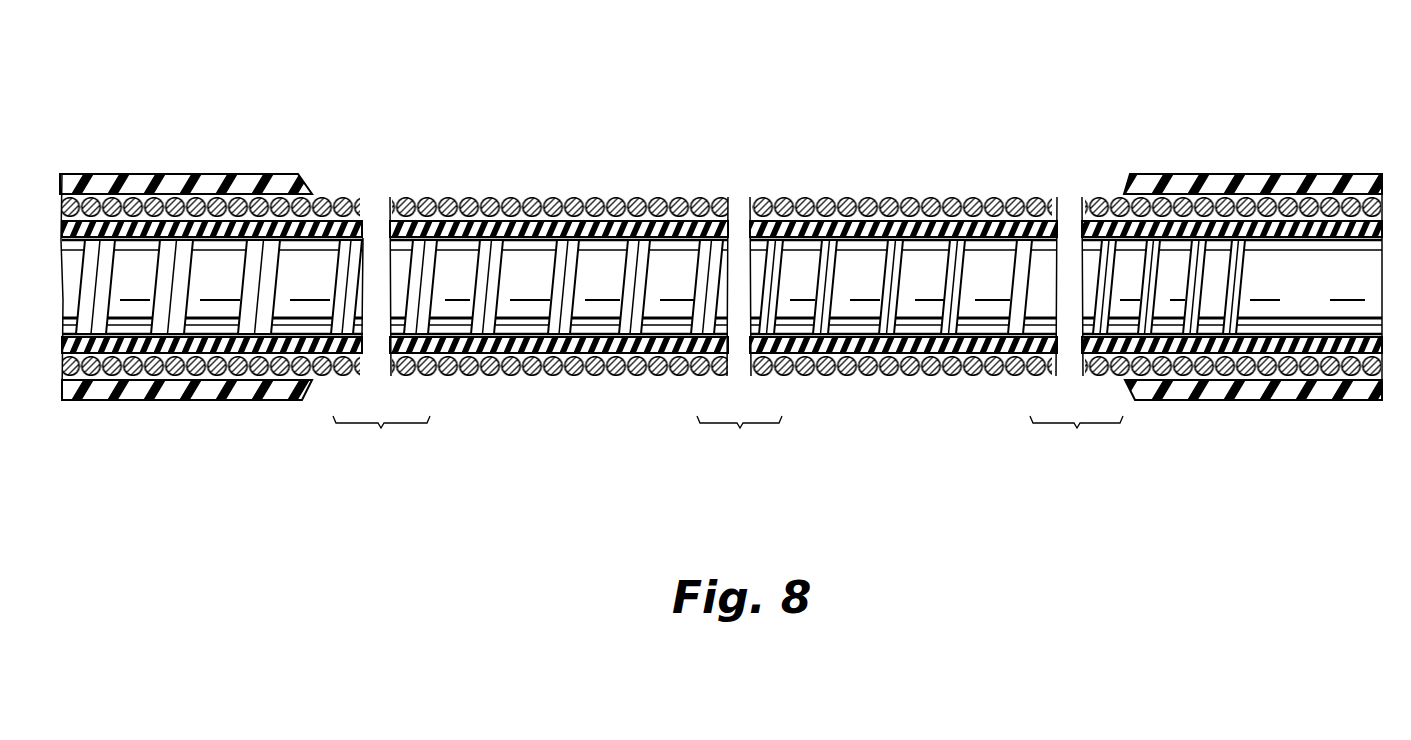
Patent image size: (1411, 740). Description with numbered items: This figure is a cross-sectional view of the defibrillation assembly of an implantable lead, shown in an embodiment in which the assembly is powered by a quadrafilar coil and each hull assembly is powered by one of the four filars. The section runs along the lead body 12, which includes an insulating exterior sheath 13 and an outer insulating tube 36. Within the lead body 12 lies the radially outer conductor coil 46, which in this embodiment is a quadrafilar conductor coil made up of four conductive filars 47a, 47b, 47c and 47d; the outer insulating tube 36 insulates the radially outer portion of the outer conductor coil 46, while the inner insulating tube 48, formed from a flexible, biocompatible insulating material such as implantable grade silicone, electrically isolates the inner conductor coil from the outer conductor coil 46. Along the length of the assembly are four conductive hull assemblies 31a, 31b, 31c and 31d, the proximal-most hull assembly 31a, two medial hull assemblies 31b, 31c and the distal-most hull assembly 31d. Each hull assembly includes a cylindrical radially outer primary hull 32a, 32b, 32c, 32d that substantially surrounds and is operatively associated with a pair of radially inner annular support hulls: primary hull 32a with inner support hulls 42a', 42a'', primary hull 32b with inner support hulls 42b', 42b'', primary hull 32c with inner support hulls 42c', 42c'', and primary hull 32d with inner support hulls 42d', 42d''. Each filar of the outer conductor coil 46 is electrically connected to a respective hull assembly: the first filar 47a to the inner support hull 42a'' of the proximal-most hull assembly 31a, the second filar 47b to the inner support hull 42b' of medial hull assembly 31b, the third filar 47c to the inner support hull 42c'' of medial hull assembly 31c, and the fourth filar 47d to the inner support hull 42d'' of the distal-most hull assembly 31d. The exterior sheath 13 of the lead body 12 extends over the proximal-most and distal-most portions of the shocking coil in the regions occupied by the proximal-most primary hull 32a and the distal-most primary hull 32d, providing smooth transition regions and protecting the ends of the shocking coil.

The lead body 12 is at (85, 176).
The exterior sheath 13 is at (1333, 186).
The outer insulating tube 36 is at (1062, 200).
The outer conductor coil 46 is at (205, 280).
The inner insulating tube 48 is at (1320, 298).
The first filar 47a is at (155, 176).
The second filar 47b is at (145, 176).
The third filar 47c is at (120, 176).
The fourth filar 47d is at (105, 176).
The proximal-most hull assembly 31a is at (240, 157).
The proximal-most primary hull 32a is at (316, 178).
The medial hull assembly 31b is at (565, 398).
The primary outer hull 32b is at (559, 394).
The medial hull assembly 31c is at (903, 368).
The primary outer hull 32c is at (895, 378).
The distal-most hull assembly 31d is at (1233, 411).
The distal-most primary hull 32d is at (1225, 398).
The inner support hull 42a' is at (187, 423).
The inner support hull 42a'' is at (212, 404).
The inner support hull 42b' is at (560, 348).
The inner support hull 42b'' is at (559, 345).
The inner support hull 42c' is at (903, 341).
The inner support hull 42c'' is at (973, 334).
The inner support hull 42d' is at (1232, 364).
The inner support hull 42d'' is at (1233, 329).